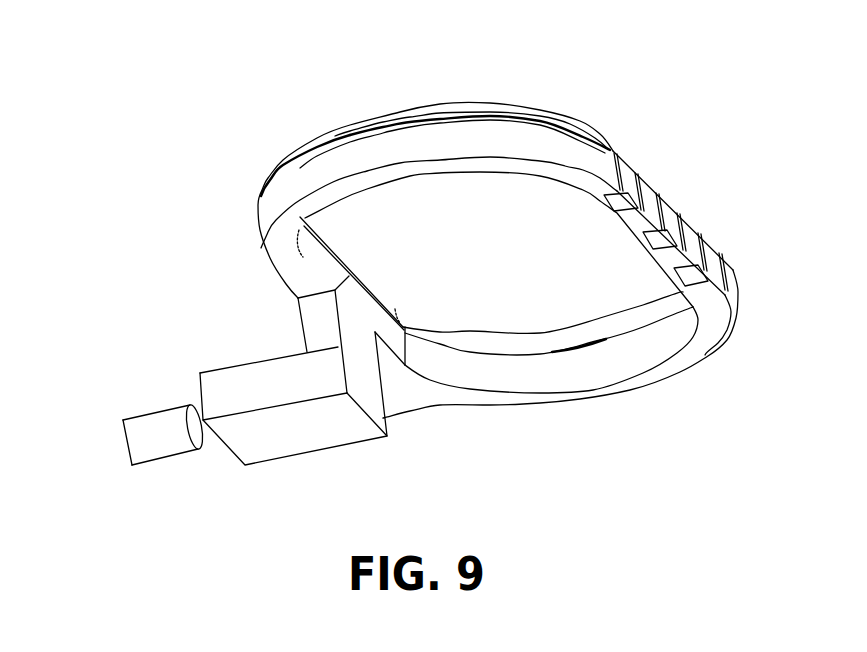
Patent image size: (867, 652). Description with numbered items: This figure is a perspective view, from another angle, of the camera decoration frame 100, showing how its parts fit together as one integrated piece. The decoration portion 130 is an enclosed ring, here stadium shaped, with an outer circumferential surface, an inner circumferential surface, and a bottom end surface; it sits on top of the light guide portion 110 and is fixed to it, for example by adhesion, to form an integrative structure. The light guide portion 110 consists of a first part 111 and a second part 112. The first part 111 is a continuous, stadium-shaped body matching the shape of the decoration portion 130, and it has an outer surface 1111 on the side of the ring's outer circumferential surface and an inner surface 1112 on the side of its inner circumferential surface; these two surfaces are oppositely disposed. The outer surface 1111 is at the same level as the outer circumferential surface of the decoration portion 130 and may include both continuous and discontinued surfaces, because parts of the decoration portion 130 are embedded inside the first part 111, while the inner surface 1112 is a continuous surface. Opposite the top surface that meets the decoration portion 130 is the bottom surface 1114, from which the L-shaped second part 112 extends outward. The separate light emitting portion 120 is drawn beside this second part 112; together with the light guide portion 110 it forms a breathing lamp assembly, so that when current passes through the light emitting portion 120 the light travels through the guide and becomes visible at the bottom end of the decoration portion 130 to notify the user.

The camera decoration frame 100 is at (102, 50).
The light guide portion 110 is at (511, 428).
The first part 111 is at (492, 378).
The second part 112 is at (385, 436).
The outer surface 1111 is at (282, 197).
The inner surface 1112 is at (577, 367).
The bottom surface 1114 is at (717, 330).
The light emitting portion 120 is at (137, 441).
The decoration portion 130 is at (440, 103).